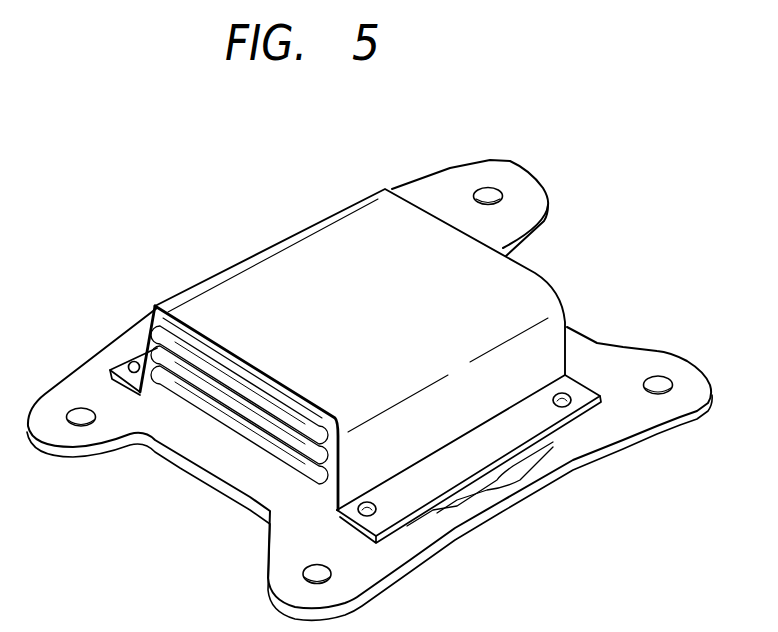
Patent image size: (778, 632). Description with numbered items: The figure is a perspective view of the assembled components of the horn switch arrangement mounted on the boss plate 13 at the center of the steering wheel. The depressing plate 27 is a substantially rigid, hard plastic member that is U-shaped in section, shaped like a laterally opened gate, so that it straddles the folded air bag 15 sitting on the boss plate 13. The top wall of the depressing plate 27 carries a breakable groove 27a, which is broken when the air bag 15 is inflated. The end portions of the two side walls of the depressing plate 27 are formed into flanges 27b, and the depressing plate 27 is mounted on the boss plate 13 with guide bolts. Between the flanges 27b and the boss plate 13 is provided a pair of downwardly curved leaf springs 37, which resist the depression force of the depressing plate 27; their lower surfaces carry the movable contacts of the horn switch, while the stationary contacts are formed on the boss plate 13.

The boss plate 13 is at (398, 570).
The folded air bag 15 is at (260, 440).
The depressing plate 27 is at (382, 346).
The breakable groove 27a is at (245, 363).
The flanges 27b is at (547, 418).
The leaf springs 37 is at (527, 473).